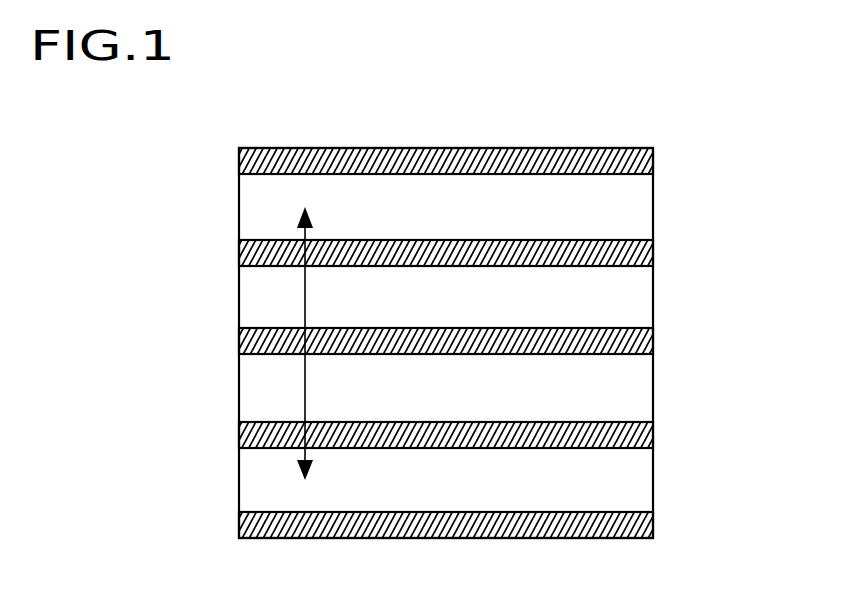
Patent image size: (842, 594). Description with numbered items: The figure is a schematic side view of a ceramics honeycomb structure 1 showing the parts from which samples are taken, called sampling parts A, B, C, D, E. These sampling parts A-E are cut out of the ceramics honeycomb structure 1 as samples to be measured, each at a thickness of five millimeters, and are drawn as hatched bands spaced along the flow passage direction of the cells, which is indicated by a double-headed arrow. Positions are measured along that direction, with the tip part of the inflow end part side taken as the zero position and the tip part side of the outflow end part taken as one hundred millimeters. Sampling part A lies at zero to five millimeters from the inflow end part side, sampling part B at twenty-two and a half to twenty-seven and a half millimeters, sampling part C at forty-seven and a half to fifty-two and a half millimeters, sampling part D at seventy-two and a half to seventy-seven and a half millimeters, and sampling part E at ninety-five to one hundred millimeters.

The ceramics honeycomb structure 1 is at (518, 314).
The sampling part A is at (668, 520).
The sampling part B is at (668, 433).
The sampling part C is at (668, 342).
The sampling part D is at (668, 250).
The sampling part E is at (668, 162).